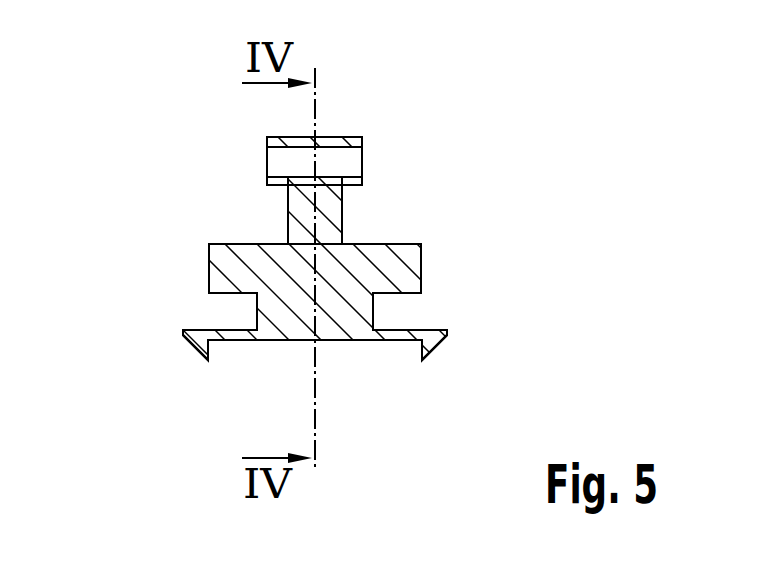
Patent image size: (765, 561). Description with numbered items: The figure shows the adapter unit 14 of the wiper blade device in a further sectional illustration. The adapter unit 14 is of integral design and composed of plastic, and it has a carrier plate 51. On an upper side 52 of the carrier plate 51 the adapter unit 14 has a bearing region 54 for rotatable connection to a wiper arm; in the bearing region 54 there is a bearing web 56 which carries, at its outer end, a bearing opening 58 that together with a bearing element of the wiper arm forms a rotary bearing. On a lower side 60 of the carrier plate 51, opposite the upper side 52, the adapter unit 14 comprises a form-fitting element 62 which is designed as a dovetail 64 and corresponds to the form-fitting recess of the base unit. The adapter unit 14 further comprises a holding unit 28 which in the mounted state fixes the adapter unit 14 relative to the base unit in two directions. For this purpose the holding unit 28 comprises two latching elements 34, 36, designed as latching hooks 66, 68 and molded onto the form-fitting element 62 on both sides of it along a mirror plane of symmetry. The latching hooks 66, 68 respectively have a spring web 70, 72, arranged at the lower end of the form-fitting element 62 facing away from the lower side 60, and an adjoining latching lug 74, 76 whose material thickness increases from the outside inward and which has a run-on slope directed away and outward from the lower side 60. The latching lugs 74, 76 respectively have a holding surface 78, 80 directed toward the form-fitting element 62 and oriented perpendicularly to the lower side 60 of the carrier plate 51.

The adapter unit 14 is at (410, 270).
The holding unit 28 is at (177, 368).
The latching element 34 is at (183, 338).
The latching element 36 is at (447, 337).
The carrier plate 51 is at (410, 288).
The upper side 52 is at (390, 232).
The bearing region 54 is at (252, 215).
The bearing web 56 is at (298, 216).
The bearing opening 58 is at (377, 158).
The lower side 60 is at (409, 305).
The form-fitting element 62 is at (268, 310).
The dovetail 64 is at (268, 310).
The latching hook 66 is at (183, 338).
The latching hook 68 is at (447, 337).
The spring web 70 is at (240, 340).
The spring web 72 is at (390, 340).
The latching lug 74 is at (187, 356).
The latching lug 76 is at (445, 354).
The holding surface 78 is at (222, 352).
The holding surface 80 is at (410, 349).